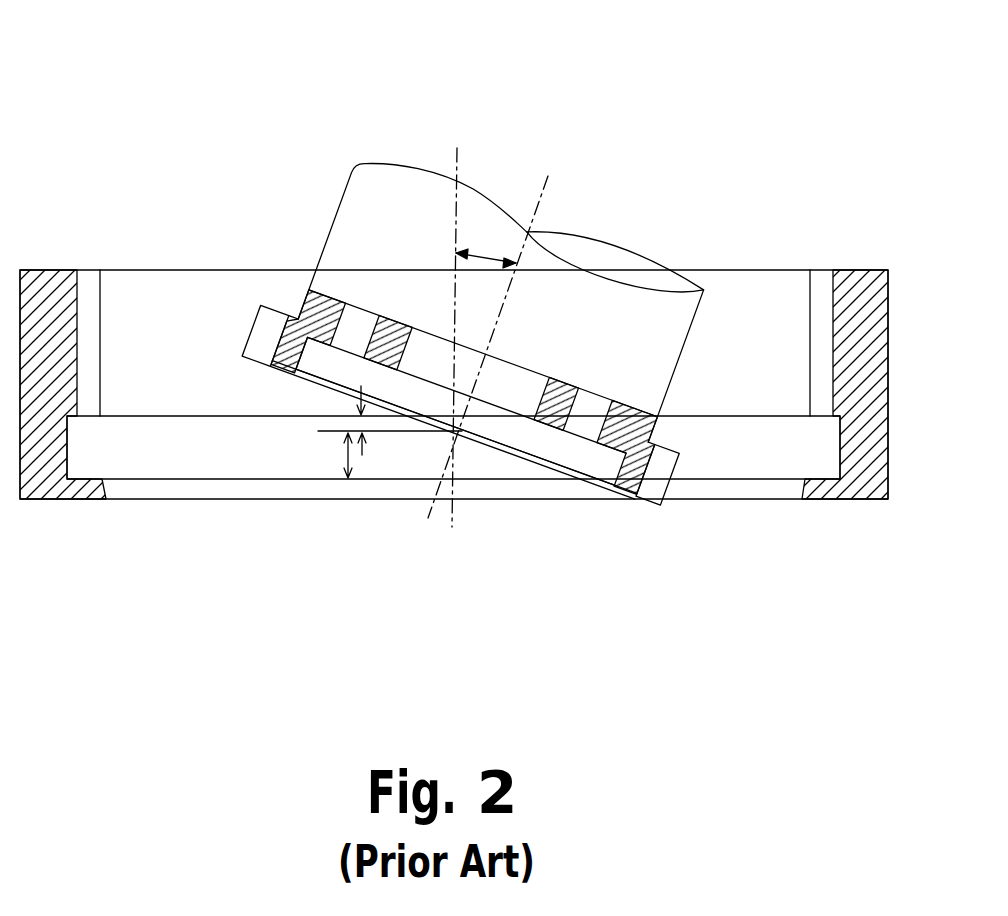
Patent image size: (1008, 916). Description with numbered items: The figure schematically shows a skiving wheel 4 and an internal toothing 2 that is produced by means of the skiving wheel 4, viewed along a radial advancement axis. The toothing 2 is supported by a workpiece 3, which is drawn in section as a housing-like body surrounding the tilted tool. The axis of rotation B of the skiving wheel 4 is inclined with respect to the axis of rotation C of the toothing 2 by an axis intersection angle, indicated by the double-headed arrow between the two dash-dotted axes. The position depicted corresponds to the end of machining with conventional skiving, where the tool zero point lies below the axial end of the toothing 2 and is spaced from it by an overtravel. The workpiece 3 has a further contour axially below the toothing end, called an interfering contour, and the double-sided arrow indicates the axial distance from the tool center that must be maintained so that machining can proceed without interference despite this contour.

The internal toothing 2 is at (88, 300).
The workpiece 3 is at (907, 153).
The skiving wheel 4 is at (325, 192).
The axis of rotation of the skiving wheel B is at (550, 192).
The axis of rotation of the toothing C is at (462, 153).